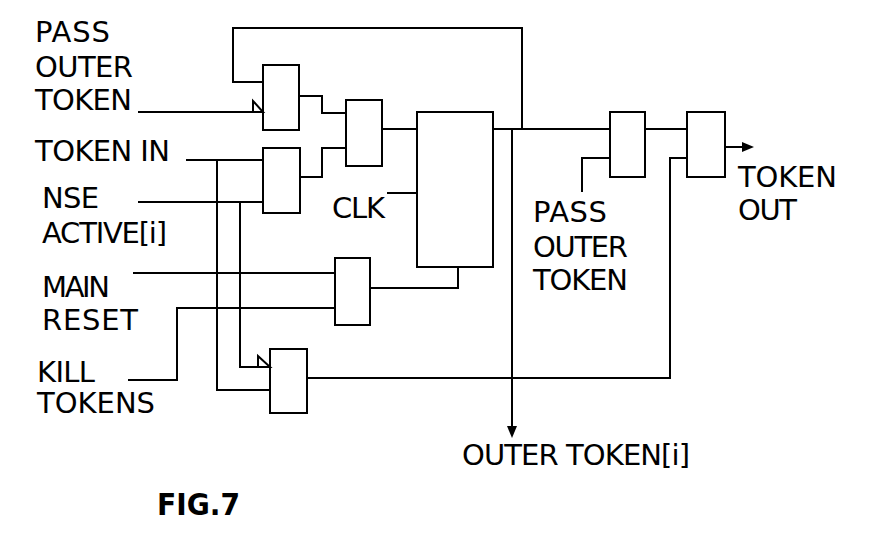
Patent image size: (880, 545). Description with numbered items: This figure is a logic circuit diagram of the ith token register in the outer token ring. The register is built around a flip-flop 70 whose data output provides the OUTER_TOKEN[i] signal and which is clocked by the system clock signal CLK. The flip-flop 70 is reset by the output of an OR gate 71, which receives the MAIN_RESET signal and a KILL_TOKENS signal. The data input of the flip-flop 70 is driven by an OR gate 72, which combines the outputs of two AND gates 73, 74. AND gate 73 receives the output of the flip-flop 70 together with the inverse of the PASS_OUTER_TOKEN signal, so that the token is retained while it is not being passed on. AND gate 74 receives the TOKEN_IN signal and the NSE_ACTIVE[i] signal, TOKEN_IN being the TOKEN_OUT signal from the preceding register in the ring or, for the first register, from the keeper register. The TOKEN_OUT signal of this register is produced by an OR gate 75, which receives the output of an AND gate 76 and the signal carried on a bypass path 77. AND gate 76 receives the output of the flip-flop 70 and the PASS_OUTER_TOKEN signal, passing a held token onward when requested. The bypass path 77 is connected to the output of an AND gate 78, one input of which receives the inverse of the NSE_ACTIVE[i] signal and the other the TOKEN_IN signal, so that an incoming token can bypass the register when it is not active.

The flip-flop 70 is at (465, 109).
The OR gate 71 is at (371, 315).
The OR gate 72 is at (368, 102).
The AND gate 73 is at (299, 75).
The AND gate 74 is at (288, 214).
The OR gate 75 is at (700, 112).
The AND gate 76 is at (615, 112).
The bypass path 77 is at (670, 320).
The AND gate 78 is at (307, 412).